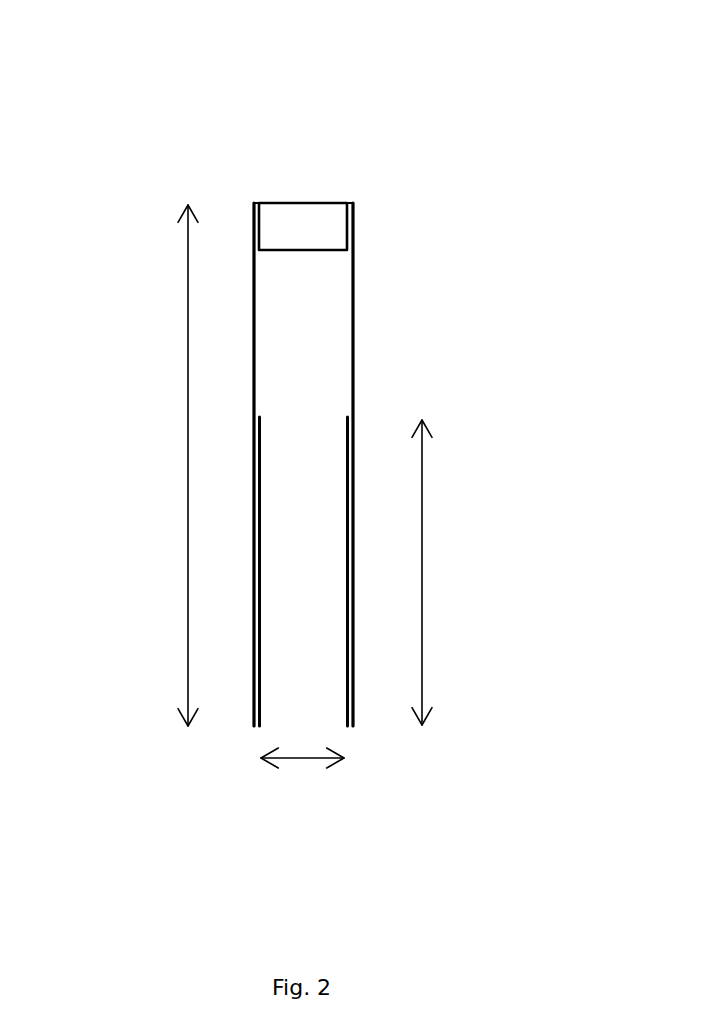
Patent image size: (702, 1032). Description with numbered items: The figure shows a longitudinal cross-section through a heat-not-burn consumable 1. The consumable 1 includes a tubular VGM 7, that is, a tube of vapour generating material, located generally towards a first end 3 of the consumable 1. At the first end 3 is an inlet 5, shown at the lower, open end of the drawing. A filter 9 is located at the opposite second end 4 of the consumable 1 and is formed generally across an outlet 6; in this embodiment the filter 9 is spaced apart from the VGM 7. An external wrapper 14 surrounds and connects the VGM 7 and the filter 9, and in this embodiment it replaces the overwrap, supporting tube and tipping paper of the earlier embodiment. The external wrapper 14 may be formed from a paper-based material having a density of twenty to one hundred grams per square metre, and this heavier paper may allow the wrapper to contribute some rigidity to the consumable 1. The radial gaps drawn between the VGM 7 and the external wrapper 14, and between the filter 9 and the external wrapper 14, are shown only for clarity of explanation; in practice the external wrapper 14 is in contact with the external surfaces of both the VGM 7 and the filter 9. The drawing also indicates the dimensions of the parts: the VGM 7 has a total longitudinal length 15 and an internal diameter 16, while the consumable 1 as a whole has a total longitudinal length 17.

The HNB consumable 1 is at (398, 170).
The first end 3 is at (383, 760).
The second end 4 is at (290, 162).
The inlet 5 is at (283, 723).
The outlet 6 is at (316, 193).
The tubular VGM 7 is at (353, 433).
The filter 9 is at (330, 230).
The external wrapper 14 is at (349, 326).
The total longitudinal length of the VGM 15 is at (422, 558).
The internal diameter of the VGM 16 is at (297, 759).
The total longitudinal length of the consumable 17 is at (188, 468).